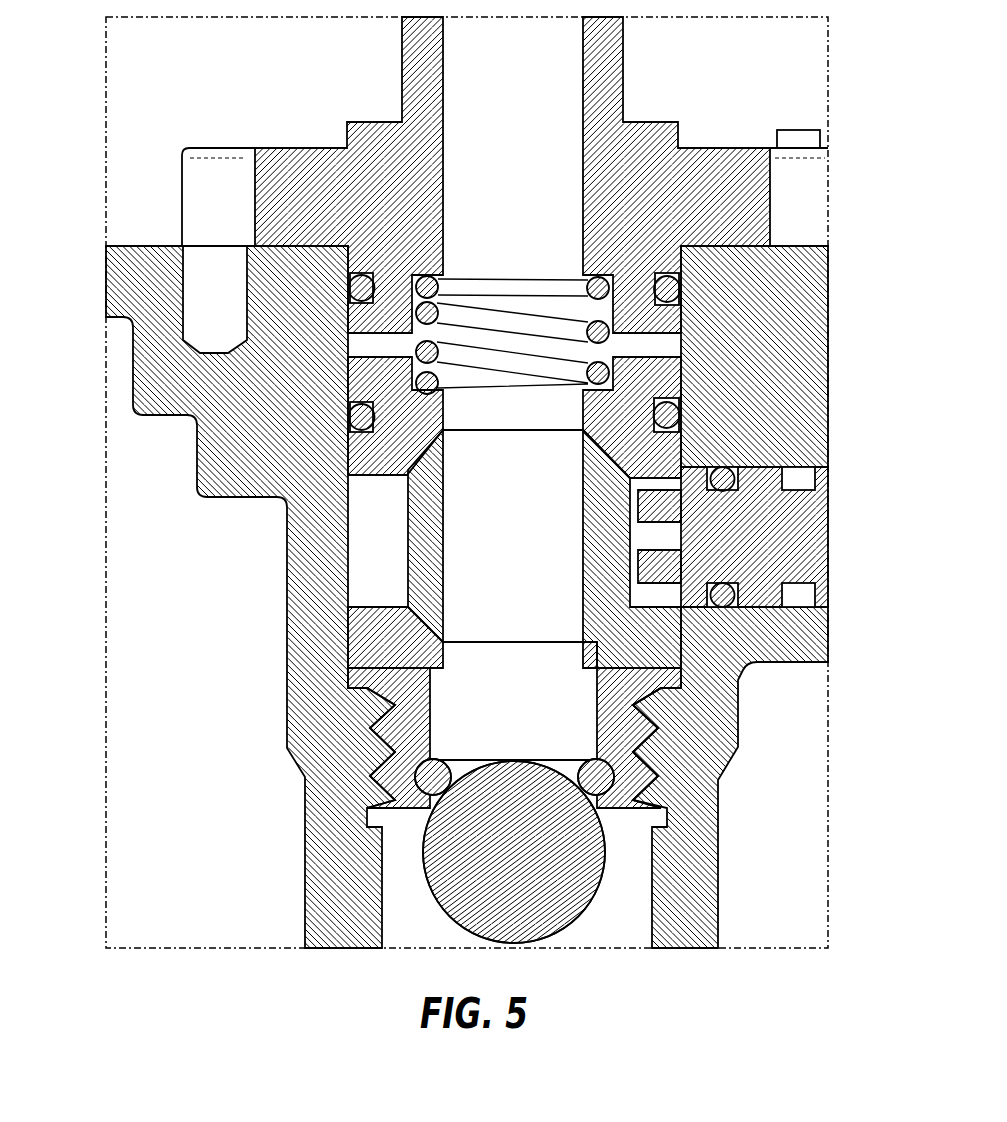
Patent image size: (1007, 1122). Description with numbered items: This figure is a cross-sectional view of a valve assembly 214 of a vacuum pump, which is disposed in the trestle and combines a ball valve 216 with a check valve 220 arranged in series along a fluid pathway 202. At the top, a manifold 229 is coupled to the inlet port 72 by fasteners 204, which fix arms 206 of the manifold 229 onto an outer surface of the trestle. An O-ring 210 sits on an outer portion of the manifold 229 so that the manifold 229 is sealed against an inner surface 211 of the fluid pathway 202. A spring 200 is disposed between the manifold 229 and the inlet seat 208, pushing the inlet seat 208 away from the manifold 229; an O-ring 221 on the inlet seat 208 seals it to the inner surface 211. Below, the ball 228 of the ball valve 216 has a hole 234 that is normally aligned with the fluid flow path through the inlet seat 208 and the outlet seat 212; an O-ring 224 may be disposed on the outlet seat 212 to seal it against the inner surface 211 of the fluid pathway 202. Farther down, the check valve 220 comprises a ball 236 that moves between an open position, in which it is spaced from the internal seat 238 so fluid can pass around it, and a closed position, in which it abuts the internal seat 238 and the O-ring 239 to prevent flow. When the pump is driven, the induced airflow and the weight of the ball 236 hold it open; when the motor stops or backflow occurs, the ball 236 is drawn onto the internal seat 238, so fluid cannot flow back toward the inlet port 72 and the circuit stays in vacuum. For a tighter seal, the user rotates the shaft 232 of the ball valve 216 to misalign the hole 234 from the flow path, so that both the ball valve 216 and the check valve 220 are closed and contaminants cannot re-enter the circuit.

The inlet port 72 is at (338, 267).
The spring 200 is at (683, 340).
The fluid pathway 202 is at (440, 727).
The fasteners 204 is at (790, 137).
The arms 206 is at (213, 190).
The inlet seat 208 is at (653, 385).
The O-ring 210 is at (348, 290).
The inner surface 211 is at (348, 570).
The outlet seat 212 is at (683, 623).
The valve assembly 214 is at (70, 228).
The ball valve 216 is at (840, 467).
The check valve 220 is at (668, 982).
The O-ring 221 is at (348, 410).
The O-ring 224 is at (683, 647).
The ball 228 is at (633, 458).
The manifold 229 is at (647, 140).
The shaft 232 is at (835, 485).
The hole 234 is at (580, 627).
The ball 236 is at (472, 872).
The internal seat 238 is at (650, 795).
The O-ring 239 is at (415, 770).